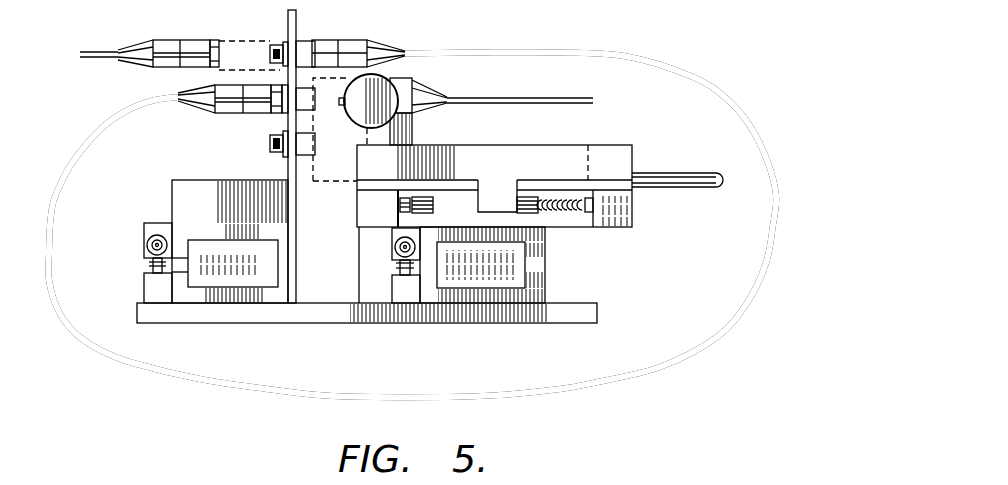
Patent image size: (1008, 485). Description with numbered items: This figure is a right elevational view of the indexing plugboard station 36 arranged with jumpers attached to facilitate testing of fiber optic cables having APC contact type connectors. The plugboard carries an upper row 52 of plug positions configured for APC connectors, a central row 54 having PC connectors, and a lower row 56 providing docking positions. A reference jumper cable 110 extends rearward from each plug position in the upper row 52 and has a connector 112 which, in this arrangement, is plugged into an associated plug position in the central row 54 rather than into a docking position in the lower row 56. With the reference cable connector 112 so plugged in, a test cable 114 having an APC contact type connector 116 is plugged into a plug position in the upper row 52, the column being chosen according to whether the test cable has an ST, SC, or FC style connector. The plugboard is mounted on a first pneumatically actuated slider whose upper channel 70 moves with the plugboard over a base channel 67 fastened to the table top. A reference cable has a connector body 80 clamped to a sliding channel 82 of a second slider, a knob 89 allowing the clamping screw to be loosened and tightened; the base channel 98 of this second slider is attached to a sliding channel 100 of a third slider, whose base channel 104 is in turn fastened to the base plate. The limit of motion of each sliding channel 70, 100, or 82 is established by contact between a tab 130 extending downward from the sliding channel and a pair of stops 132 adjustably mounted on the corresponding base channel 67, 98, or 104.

The indexing plugboard station 36 is at (407, 201).
The upper row 52 is at (257, 49).
The central row 54 is at (262, 73).
The lower row 56 is at (256, 144).
The base channel 67 is at (298, 282).
The upper channel 70 is at (217, 223).
The connector body 80 is at (433, 88).
The sliding channel 82 is at (622, 143).
The knob 89 is at (387, 75).
The base channel 98 is at (633, 218).
The sliding channel 100 is at (547, 247).
The base channel 104 is at (551, 283).
The reference jumper cable 110 is at (522, 52).
The connector 112 is at (217, 112).
The test cable 114 is at (107, 58).
The APC contact type connector 116 is at (133, 45).
The tab 130 is at (478, 207).
The stops 132 is at (527, 200).